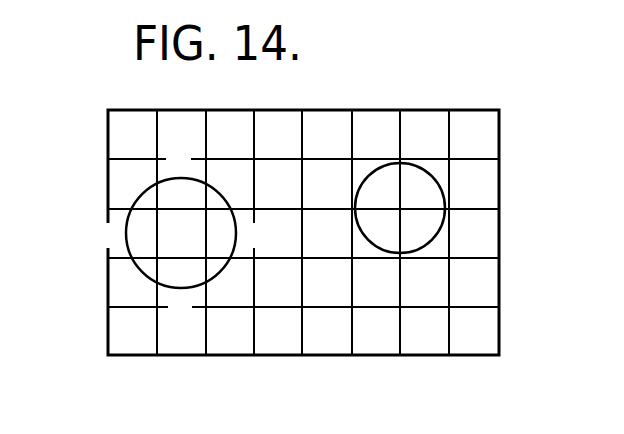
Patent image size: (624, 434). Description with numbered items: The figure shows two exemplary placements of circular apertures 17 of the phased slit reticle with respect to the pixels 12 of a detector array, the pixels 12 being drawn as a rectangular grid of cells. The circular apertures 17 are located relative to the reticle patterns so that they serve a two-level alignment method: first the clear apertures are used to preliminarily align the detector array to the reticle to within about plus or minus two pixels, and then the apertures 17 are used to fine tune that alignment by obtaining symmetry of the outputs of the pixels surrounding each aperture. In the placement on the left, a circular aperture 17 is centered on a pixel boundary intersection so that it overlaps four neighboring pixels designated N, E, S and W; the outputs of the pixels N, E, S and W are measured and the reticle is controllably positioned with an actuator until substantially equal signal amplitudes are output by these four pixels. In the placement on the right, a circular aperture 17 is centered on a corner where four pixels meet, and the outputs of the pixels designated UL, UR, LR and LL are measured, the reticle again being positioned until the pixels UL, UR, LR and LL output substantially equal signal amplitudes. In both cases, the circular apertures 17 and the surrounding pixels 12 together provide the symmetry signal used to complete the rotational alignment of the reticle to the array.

The pixels 12 is at (108, 292).
The circular apertures 17 is at (133, 262).
The pixel designated N is at (178, 162).
The pixel designated S is at (180, 308).
The pixel designated W is at (108, 237).
The pixel designated E is at (249, 237).
The pixel designated UL is at (363, 168).
The pixel designated UR is at (433, 167).
The pixel designated LL is at (356, 246).
The pixel designated LR is at (433, 250).